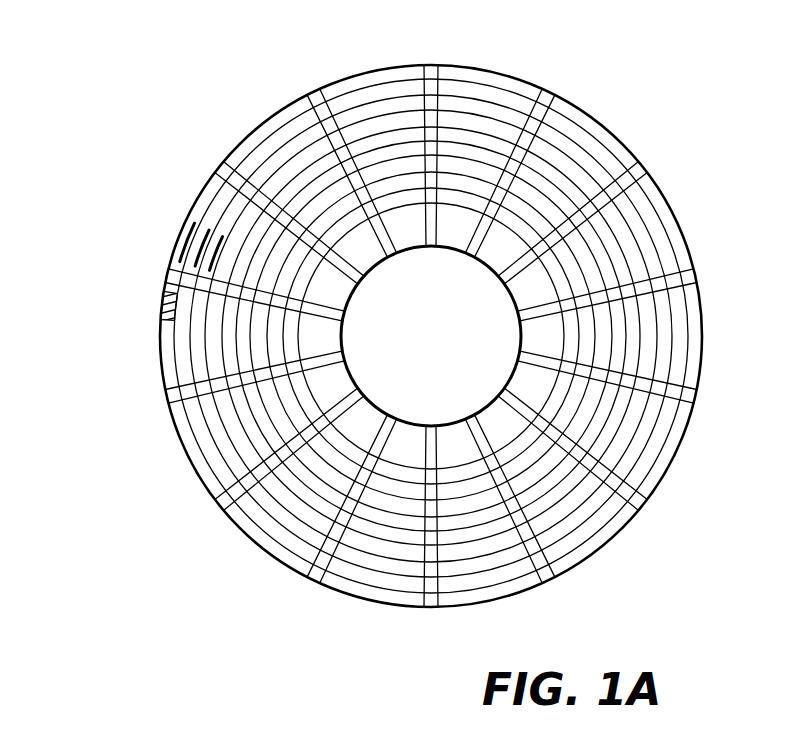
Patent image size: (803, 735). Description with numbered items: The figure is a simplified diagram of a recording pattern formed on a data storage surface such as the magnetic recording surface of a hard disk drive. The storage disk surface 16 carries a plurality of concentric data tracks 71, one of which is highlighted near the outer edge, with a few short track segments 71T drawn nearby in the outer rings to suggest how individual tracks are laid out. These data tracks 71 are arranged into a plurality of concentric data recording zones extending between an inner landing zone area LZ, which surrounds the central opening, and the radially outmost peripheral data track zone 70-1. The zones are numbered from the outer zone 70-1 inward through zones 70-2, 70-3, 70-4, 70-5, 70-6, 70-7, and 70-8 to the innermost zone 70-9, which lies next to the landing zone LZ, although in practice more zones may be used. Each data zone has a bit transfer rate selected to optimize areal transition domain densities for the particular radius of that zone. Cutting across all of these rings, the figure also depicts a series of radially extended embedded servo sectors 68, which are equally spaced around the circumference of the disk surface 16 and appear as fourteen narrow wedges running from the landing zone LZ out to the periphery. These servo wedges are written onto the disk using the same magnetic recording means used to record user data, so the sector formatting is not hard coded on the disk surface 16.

The storage disk surface 16 is at (108, 571).
The embedded servo sectors 68 is at (431, 63).
The radially outmost peripheral data track zone 70-1 is at (592, 125).
The data recording zone 70-2 is at (655, 228).
The data recording zone 70-3 is at (663, 340).
The data recording zone 70-4 is at (625, 430).
The data recording zone 70-5 is at (557, 497).
The data recording zone 70-6 is at (325, 493).
The data recording zone 70-7 is at (280, 415).
The data recording zone 70-8 is at (271, 338).
The data recording zone 70-9 is at (308, 268).
The inner landing zone area LZ is at (360, 248).
The tracks 71T is at (135, 217).
The concentric data tracks 71 is at (160, 305).